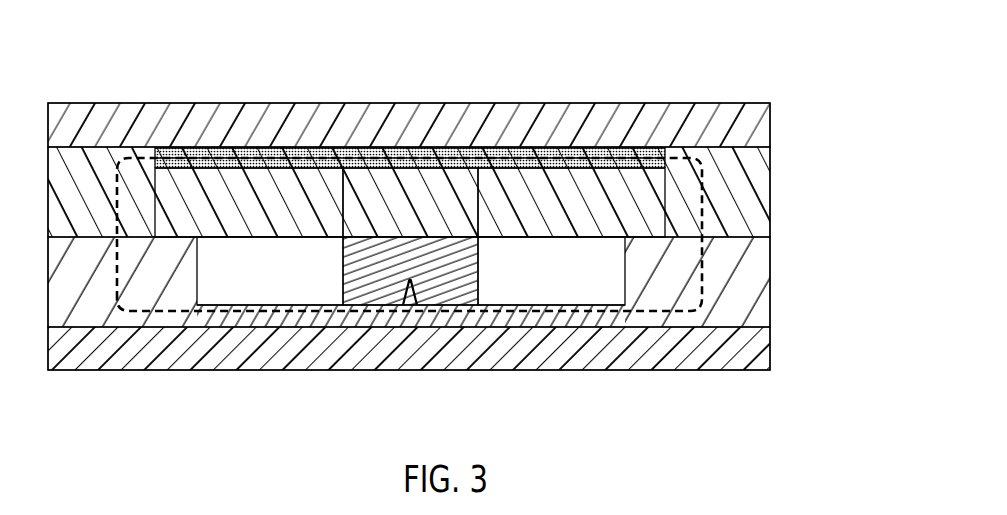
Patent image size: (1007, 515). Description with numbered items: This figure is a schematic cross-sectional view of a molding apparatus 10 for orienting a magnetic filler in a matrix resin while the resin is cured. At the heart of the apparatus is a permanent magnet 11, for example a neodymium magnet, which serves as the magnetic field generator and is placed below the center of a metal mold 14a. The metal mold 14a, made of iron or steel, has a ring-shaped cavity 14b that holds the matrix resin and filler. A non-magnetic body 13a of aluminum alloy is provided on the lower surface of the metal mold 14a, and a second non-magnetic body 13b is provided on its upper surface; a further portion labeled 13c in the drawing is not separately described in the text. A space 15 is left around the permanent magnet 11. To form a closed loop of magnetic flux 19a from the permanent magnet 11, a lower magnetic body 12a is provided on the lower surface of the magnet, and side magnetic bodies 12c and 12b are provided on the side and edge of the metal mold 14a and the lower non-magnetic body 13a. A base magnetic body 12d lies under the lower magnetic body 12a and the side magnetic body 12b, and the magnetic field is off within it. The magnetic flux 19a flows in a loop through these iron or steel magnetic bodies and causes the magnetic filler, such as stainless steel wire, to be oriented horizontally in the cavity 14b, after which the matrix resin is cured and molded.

The molding apparatus 10 is at (150, 79).
The permanent magnet 11 is at (455, 280).
The lower magnetic body 12a is at (580, 307).
The side magnetic body 12b is at (738, 278).
The side magnetic body 12c is at (737, 186).
The base magnetic body 12d is at (745, 347).
The non-magnetic body 13a is at (644, 197).
The non-magnetic body 13b is at (757, 122).
The electrode portion 13c is at (411, 197).
The metal mold 14a is at (597, 162).
The ring-shaped cavity 14b is at (545, 152).
The space 15 is at (273, 277).
The magnetic flux 19a is at (106, 312).